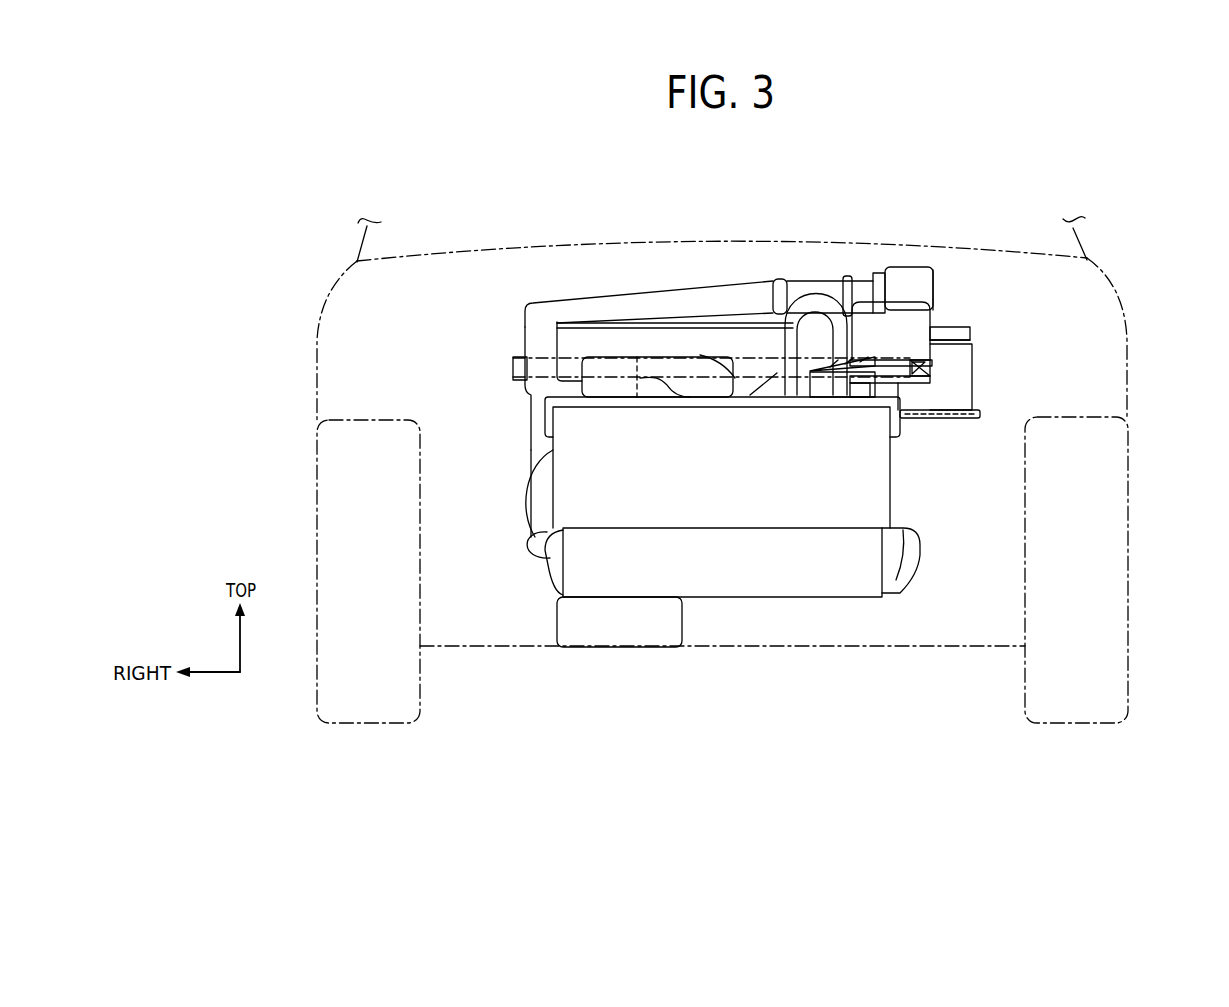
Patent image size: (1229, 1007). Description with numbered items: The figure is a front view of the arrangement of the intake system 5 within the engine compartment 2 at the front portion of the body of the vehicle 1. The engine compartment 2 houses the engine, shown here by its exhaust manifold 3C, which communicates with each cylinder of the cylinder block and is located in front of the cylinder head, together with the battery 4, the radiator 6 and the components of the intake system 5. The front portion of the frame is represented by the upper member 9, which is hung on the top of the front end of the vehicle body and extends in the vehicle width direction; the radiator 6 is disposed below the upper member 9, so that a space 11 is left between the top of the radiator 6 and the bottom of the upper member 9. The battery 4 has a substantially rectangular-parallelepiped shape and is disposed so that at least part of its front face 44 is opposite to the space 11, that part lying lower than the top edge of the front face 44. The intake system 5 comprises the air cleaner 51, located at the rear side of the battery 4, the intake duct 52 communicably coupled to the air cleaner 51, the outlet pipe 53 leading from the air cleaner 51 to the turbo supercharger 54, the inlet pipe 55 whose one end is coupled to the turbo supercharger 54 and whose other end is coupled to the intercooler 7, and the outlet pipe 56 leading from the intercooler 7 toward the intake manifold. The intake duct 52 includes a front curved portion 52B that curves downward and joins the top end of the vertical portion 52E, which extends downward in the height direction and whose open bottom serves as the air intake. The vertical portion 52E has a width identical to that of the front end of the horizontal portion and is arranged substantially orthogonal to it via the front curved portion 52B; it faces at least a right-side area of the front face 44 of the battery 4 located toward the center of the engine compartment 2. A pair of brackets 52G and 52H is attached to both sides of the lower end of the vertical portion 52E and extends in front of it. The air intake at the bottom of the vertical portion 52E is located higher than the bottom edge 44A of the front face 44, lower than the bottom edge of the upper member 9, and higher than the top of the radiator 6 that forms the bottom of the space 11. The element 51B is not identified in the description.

The vehicle 1 is at (1142, 266).
The engine compartment 2 is at (448, 347).
The exhaust manifold 3C is at (682, 378).
The battery 4 is at (980, 370).
The intake system 5 is at (930, 248).
The radiator 6 is at (898, 473).
The intercooler 7 is at (752, 575).
The upper member 9 is at (753, 355).
The space 11 is at (860, 395).
The front face 44 is at (945, 389).
The bottom edge 44A is at (953, 422).
The air cleaner 51 is at (940, 280).
The duct inlet opening 51B is at (923, 290).
The intake duct 52 is at (904, 292).
The front curved portion 52B is at (873, 318).
The vertical portion 52E is at (900, 343).
The bracket 52G is at (880, 385).
The bracket 52H is at (928, 358).
The outlet pipe 53 is at (708, 305).
The turbo supercharger 54 is at (605, 385).
The inlet pipe 55 is at (533, 503).
The outlet pipe 56 is at (917, 562).